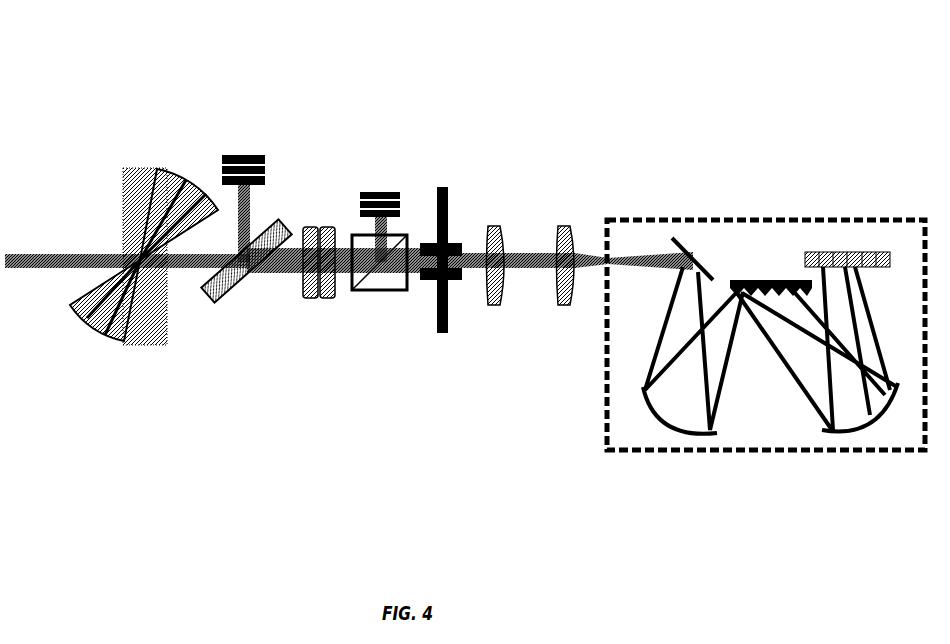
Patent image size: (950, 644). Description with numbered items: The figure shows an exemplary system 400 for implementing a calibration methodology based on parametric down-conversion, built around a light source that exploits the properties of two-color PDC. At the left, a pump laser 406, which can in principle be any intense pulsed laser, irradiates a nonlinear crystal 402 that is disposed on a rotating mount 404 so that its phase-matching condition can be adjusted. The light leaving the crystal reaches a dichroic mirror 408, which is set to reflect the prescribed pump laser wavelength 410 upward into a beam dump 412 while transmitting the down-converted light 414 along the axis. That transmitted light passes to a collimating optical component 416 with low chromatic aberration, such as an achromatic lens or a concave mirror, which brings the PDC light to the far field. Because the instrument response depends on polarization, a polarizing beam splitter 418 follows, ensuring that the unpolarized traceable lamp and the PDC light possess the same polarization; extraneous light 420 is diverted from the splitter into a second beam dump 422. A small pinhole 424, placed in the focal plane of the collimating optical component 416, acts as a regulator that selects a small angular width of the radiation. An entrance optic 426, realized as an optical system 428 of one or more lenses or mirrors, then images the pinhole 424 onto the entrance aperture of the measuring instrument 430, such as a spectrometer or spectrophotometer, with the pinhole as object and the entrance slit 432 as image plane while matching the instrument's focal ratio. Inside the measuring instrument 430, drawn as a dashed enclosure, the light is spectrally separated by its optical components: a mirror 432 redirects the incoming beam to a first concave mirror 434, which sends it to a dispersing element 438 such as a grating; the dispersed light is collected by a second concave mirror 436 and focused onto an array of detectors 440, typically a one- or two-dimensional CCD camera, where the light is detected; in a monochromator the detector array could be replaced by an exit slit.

The system 400 is at (474, 94).
The nonlinear crystal 402 is at (118, 325).
The rotating mount 404 is at (138, 215).
The pump laser 406 is at (15, 268).
The dichroic mirror 408 is at (217, 307).
The pump laser wavelength 410 is at (252, 220).
The beam dump 412 is at (243, 155).
The down-converted light 414 is at (288, 248).
The collimating optical component 416 is at (308, 303).
The polarizing beam splitter 418 is at (357, 237).
The extraneous light 420 is at (385, 232).
The beam dump 422 is at (386, 191).
The pinhole 424 is at (448, 242).
The entrance optic 426 is at (535, 214).
The optical system 428 is at (523, 355).
The measuring instrument 430 is at (752, 220).
The entrance slit 432 is at (608, 265).
The concave mirror 434 is at (662, 415).
The concave mirror 436 is at (850, 420).
The dispersing element 438 is at (760, 283).
The array of detectors 440 is at (838, 268).